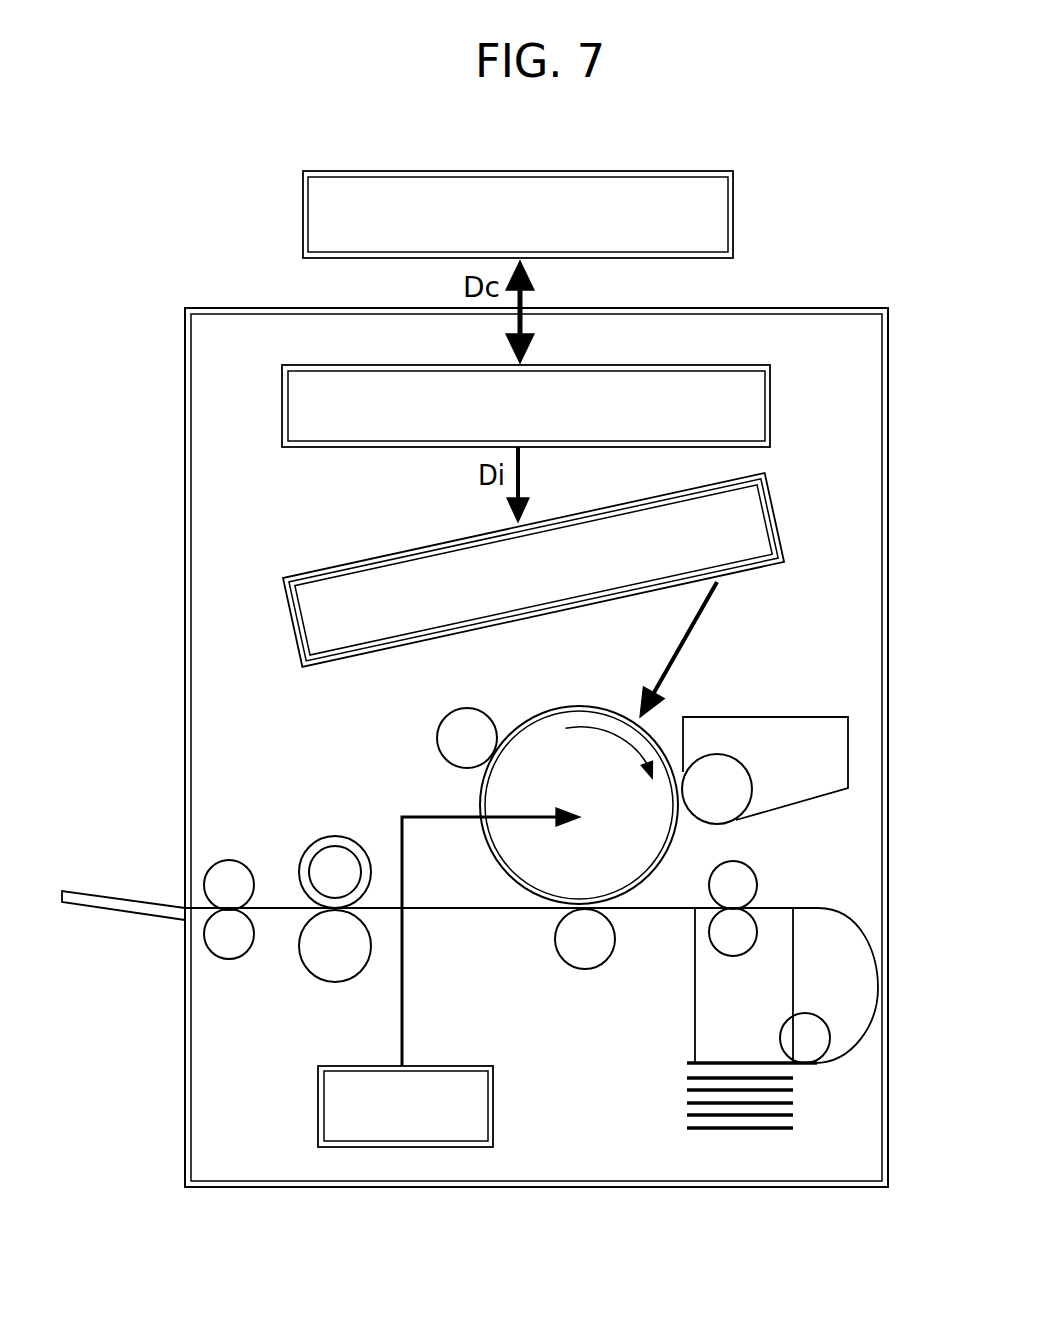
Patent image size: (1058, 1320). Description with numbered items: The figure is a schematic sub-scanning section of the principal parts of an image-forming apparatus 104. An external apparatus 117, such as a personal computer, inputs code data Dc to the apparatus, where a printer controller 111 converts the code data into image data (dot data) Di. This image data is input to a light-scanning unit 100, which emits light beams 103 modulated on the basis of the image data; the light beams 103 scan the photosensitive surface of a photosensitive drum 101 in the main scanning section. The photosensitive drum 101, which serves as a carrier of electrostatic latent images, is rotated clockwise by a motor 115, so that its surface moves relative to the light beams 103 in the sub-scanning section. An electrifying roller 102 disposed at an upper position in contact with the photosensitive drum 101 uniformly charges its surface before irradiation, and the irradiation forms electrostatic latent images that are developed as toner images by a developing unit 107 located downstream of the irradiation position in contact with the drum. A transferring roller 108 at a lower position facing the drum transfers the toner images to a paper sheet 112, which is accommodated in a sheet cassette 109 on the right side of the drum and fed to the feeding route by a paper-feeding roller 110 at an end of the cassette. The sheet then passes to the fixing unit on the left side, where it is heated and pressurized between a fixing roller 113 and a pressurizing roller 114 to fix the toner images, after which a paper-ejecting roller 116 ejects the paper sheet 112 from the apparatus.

The light-scanning unit 100 is at (358, 585).
The photosensitive drum 101 is at (673, 850).
The electrifying roller 102 is at (437, 740).
The light beams 103 is at (690, 632).
The image-forming apparatus 104 is at (848, 308).
The developing unit 107 is at (845, 745).
The transferring roller 108 is at (592, 960).
The sheet cassette 109 is at (687, 1103).
The paper-feeding roller 110 is at (805, 1040).
The printer controller 111 is at (760, 412).
The paper sheet 112 is at (468, 913).
The fixing roller 113 is at (325, 860).
The pressurizing roller 114 is at (318, 962).
The motor 115 is at (318, 1110).
The paper-ejecting roller 116 is at (229, 868).
The external apparatus 117 is at (720, 222).